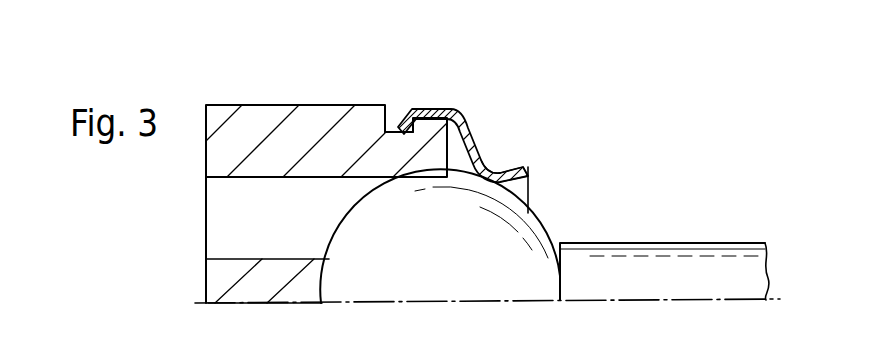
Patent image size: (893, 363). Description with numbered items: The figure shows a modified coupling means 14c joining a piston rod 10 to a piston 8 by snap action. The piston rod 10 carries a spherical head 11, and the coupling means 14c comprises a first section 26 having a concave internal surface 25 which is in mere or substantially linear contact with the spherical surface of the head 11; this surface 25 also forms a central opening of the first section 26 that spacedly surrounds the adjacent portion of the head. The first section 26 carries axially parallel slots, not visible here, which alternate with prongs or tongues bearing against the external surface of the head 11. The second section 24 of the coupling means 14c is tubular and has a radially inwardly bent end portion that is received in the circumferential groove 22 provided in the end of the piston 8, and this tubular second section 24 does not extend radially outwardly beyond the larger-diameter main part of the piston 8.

The piston 8 is at (218, 283).
The piston rod 10 is at (712, 258).
The head 11 is at (543, 247).
The coupling means 14c is at (544, 163).
The circumferential groove 22 is at (392, 117).
The second section 24 is at (400, 117).
The concave internal surface 25 is at (531, 185).
The first section 26 is at (507, 160).